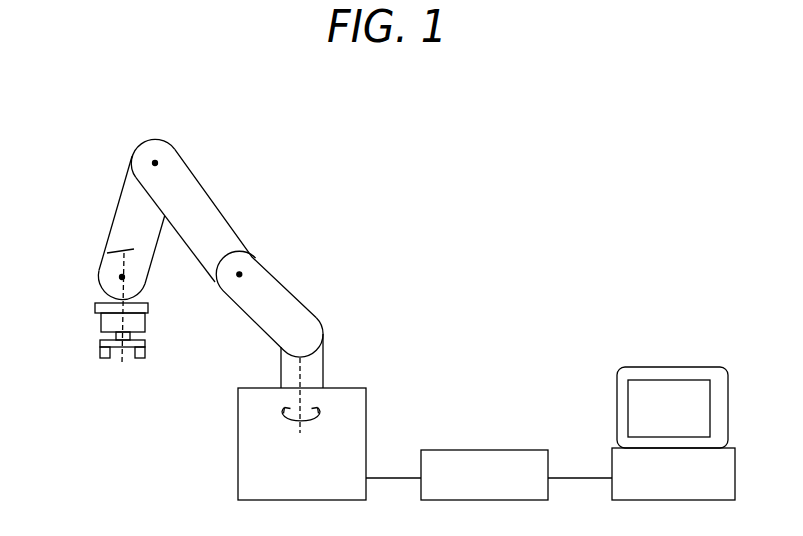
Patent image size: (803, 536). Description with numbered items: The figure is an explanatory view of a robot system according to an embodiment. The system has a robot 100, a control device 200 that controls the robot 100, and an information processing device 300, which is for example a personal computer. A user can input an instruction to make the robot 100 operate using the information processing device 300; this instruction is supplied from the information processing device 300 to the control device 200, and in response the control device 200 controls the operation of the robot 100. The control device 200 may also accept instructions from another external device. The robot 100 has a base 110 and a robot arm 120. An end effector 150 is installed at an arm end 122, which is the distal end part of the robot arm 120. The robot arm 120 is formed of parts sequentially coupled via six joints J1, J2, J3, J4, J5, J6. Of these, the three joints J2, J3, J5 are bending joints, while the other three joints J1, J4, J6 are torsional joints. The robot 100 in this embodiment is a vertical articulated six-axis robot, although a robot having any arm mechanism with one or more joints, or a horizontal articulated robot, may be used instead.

The robot 100 is at (238, 82).
The base 110 is at (368, 389).
The robot arm 120 is at (221, 207).
The arm end 122 is at (149, 307).
The end effector 150 is at (146, 343).
The joint J1 is at (303, 379).
The joint J2 is at (241, 273).
The joint J3 is at (158, 160).
The joint J4 is at (112, 251).
The joint J5 is at (120, 276).
The joint J6 is at (118, 288).
The control device 200 is at (478, 450).
The information processing device 300 is at (653, 366).